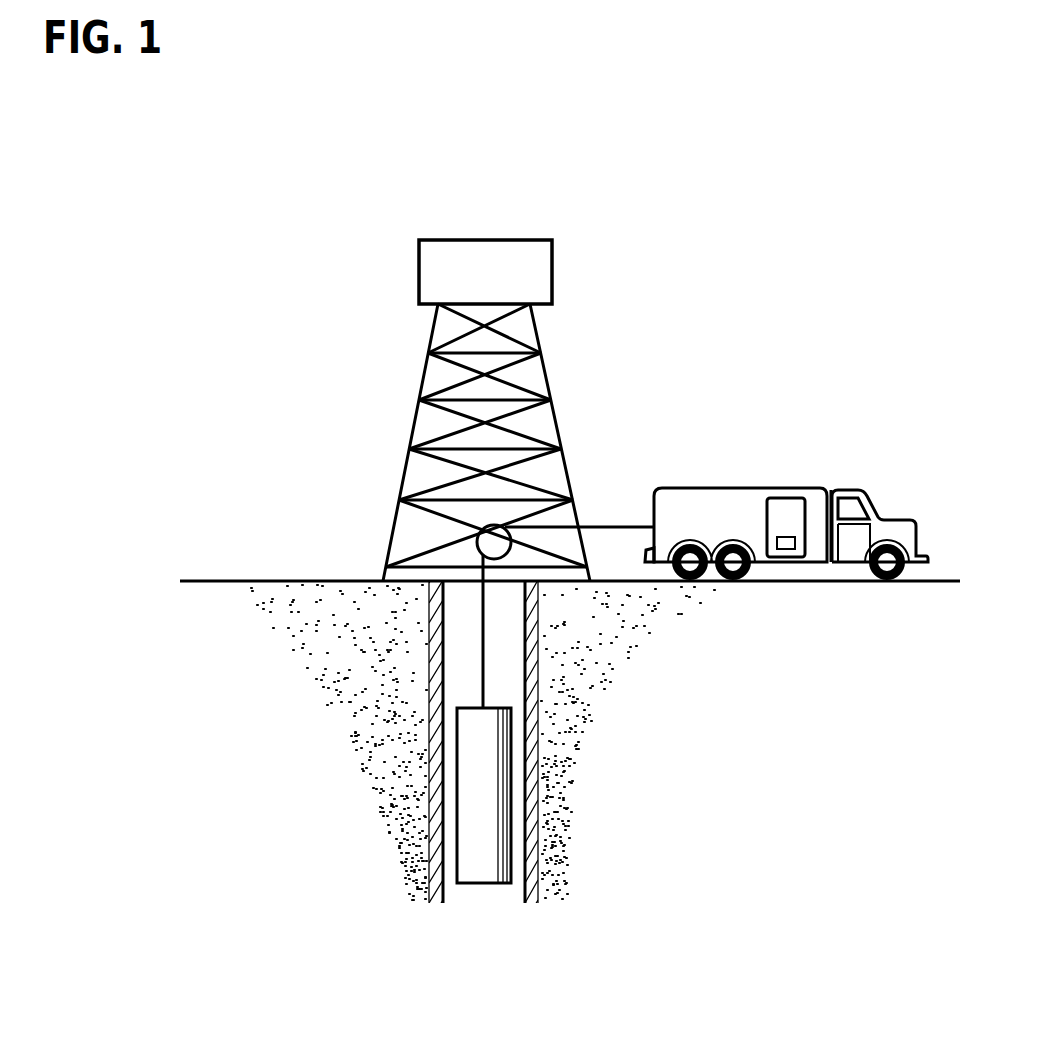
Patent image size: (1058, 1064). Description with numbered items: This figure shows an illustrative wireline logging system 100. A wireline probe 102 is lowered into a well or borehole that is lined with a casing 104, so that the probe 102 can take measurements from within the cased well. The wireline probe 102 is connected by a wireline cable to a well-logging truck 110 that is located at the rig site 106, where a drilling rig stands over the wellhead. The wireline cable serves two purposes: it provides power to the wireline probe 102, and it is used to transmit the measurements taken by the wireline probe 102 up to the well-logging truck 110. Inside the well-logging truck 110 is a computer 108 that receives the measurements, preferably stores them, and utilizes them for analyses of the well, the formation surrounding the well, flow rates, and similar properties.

The wireline logging system 100 is at (260, 188).
The wireline probe 102 is at (507, 828).
The casing 104 is at (437, 760).
The rig site 106 is at (520, 240).
The computer 108 is at (787, 497).
The well-logging truck 110 is at (893, 512).